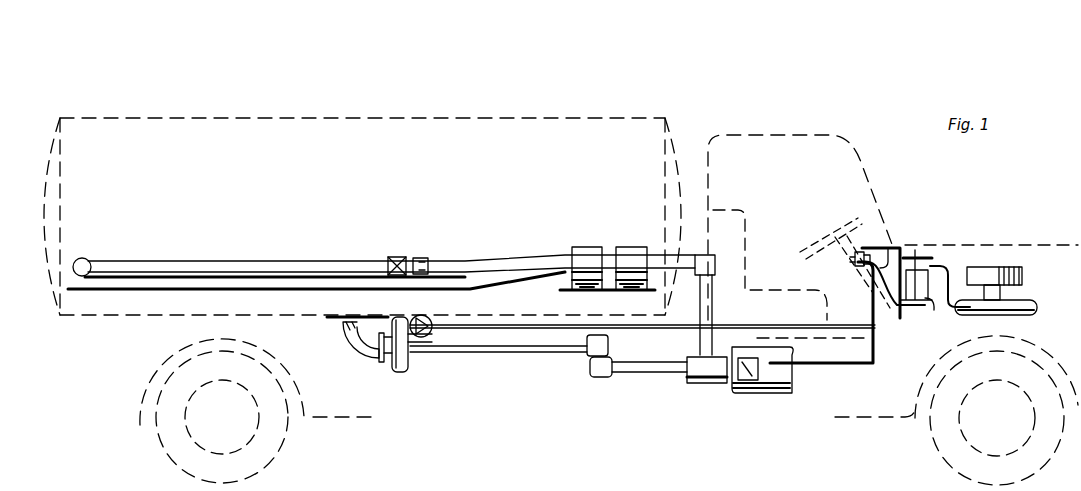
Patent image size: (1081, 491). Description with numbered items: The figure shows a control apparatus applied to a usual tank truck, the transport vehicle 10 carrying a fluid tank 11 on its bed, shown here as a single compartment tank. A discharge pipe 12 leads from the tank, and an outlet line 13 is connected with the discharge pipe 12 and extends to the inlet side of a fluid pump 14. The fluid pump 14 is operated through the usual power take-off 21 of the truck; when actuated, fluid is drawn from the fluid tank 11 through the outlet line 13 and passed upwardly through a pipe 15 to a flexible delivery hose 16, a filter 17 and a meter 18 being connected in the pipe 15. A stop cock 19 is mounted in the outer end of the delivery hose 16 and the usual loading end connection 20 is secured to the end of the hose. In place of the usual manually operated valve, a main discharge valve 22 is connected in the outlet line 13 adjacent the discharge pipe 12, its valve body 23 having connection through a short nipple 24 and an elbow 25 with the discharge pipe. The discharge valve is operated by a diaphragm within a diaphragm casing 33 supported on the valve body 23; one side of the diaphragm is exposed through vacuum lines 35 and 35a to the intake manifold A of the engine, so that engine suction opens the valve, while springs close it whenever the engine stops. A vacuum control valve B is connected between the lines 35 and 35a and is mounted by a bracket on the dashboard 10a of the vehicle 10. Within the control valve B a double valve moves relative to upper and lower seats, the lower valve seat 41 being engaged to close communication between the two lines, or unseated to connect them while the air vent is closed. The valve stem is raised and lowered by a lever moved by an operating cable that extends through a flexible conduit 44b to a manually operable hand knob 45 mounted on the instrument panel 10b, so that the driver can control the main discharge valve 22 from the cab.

The transport vehicle 10 is at (812, 136).
The dashboard 10a is at (898, 248).
The instrument panel 10b is at (866, 246).
The fluid tank 11 is at (229, 122).
The discharge pipe 12 is at (343, 333).
The outlet line 13 is at (505, 352).
The fluid pump 14 is at (697, 386).
The pipe 15 is at (713, 308).
The flexible delivery hose 16 is at (238, 265).
The filter 17 is at (632, 248).
The meter 18 is at (580, 248).
The stop cock 19 is at (390, 258).
The loading end connection 20 is at (422, 258).
The power take-off 21 is at (788, 380).
The main discharge valve 22 is at (400, 372).
The valve body 23 is at (410, 356).
The nipple 24 is at (385, 358).
The elbow 25 is at (357, 352).
The diaphragm casing 33 is at (421, 316).
The vacuum line 35 is at (530, 325).
The vacuum line 35a is at (953, 247).
The lower valve seat 41 is at (746, 396).
The flexible conduit 44b is at (933, 310).
The hand knob 45 is at (854, 262).
The intake manifold A is at (1035, 302).
The vacuum control valve B is at (916, 252).